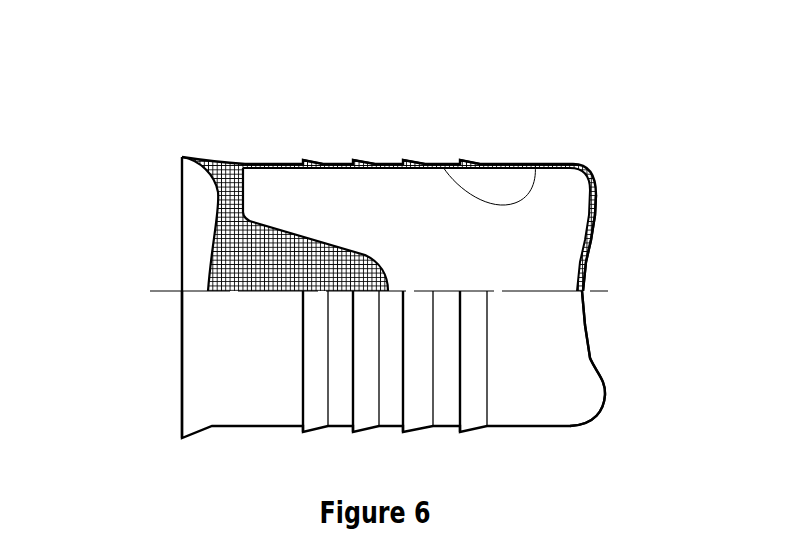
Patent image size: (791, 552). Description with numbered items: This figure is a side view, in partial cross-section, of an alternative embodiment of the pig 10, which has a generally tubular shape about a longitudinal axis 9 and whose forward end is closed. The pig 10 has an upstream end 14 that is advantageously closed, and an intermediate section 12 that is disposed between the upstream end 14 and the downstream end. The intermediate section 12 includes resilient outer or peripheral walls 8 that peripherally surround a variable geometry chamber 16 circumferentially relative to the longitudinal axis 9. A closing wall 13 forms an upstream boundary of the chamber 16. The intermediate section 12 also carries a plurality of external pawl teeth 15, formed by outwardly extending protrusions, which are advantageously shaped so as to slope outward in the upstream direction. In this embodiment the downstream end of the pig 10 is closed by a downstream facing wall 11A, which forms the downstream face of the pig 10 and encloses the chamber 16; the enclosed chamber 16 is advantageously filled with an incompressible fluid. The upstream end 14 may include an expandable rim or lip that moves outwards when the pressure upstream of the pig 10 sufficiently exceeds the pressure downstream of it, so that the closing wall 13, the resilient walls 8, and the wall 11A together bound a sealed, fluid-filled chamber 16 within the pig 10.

The pig 10 is at (259, 81).
The closing wall 13 is at (210, 243).
The upstream end 14 is at (182, 158).
The variable geometry chamber 16 is at (416, 229).
The resilient outer walls 8 is at (543, 162).
The external pawl teeth 15 is at (403, 160).
The intermediate section 12 is at (535, 163).
The wall 11A is at (585, 262).
The longitudinal axis 9 is at (602, 291).